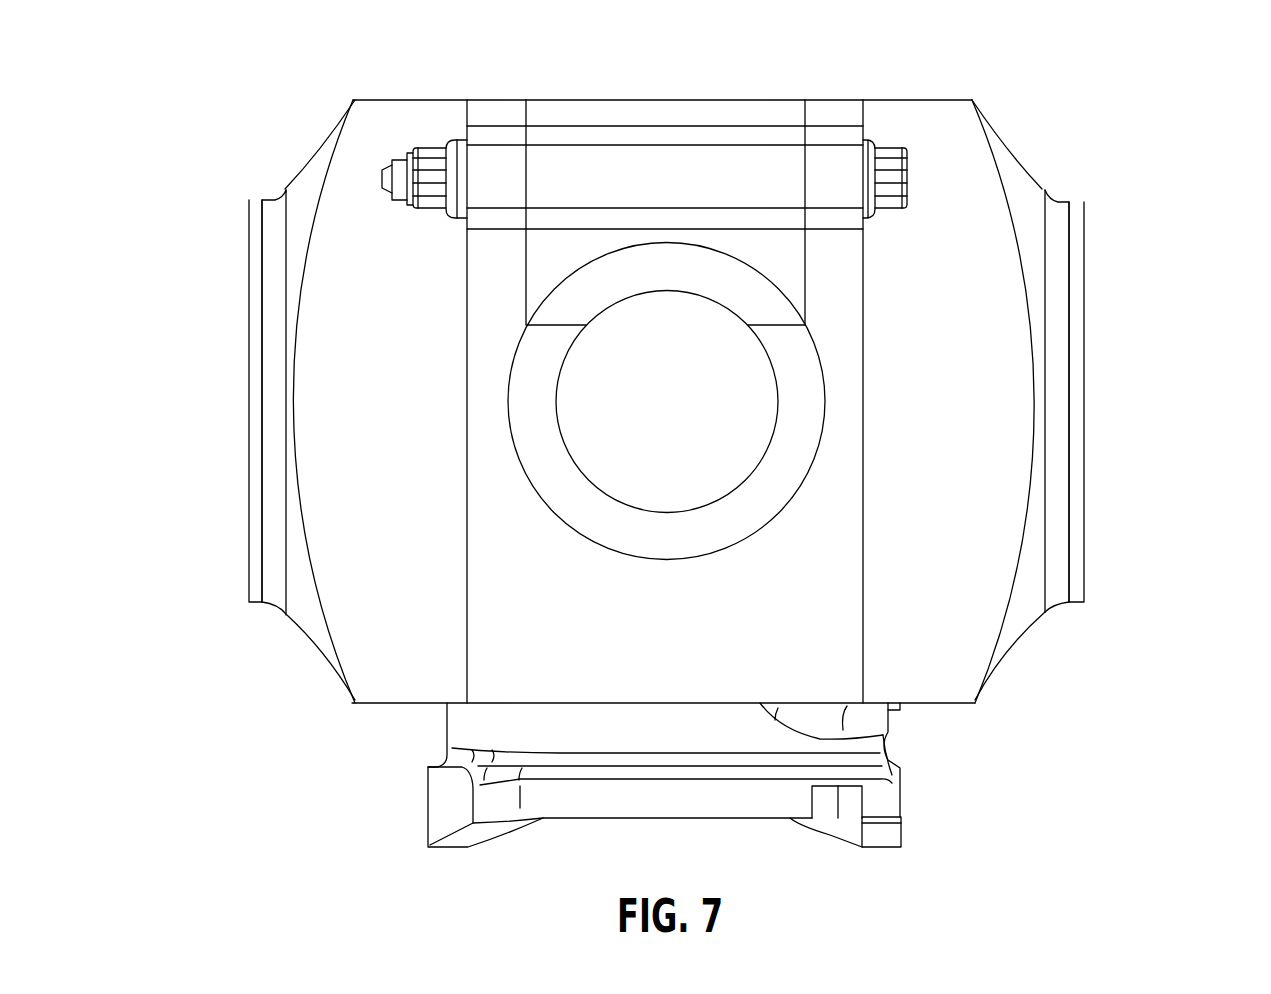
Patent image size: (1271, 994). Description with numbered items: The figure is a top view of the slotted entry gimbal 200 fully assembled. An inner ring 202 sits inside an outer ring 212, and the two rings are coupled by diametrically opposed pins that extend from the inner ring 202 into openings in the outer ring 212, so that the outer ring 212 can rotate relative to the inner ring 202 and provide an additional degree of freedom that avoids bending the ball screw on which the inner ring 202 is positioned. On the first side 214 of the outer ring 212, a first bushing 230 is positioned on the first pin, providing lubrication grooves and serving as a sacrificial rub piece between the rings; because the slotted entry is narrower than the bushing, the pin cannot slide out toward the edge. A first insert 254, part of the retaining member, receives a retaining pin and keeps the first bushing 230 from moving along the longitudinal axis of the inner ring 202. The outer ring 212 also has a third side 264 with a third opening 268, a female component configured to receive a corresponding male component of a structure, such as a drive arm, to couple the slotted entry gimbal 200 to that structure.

The slotted entry gimbal 200 is at (686, 432).
The inner ring 202 is at (890, 737).
The outer ring 212 is at (1015, 478).
The first side 214 is at (1010, 338).
The first bushing 230 is at (655, 483).
The first insert 254 is at (703, 108).
The third side 264 is at (210, 405).
The third opening 268 is at (1120, 400).